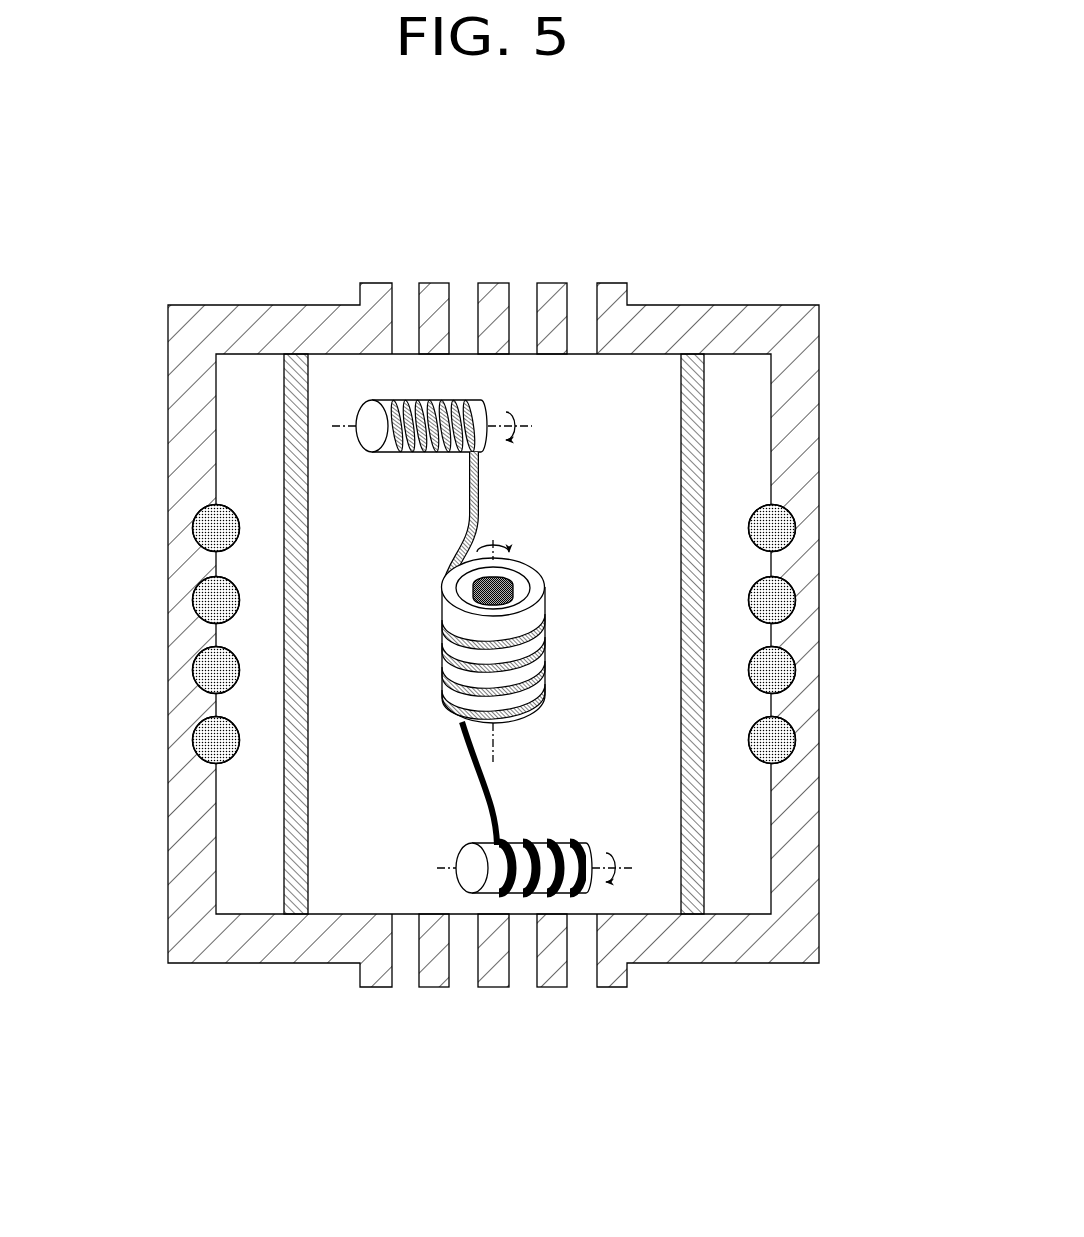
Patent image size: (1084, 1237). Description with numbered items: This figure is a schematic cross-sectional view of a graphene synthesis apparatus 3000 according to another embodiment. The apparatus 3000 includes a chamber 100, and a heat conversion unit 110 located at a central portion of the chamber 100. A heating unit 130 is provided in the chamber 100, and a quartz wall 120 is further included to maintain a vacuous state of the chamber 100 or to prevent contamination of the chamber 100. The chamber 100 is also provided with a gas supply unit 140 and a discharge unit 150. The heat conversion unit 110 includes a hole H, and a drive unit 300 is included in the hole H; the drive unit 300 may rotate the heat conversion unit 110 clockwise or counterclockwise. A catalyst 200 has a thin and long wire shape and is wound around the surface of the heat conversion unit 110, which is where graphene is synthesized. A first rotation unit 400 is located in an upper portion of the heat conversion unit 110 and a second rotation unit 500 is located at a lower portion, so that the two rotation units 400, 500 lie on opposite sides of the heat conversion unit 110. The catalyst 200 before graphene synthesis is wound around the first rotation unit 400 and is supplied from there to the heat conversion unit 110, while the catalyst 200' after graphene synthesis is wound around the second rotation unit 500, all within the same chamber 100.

The graphene synthesis apparatus 3000 is at (806, 172).
The chamber 100 is at (806, 338).
The heat conversion unit 110 is at (447, 698).
The quartz wall 120 is at (300, 900).
The heating unit 130 is at (206, 745).
The gas supply unit 140 is at (528, 263).
The discharge unit 150 is at (528, 1007).
The catalyst 200 is at (427, 520).
The catalyst after graphene synthesis 200' is at (441, 783).
The drive unit 300 is at (478, 590).
The first rotation unit 400 is at (482, 410).
The second rotation unit 500 is at (582, 845).
The hole H is at (529, 581).